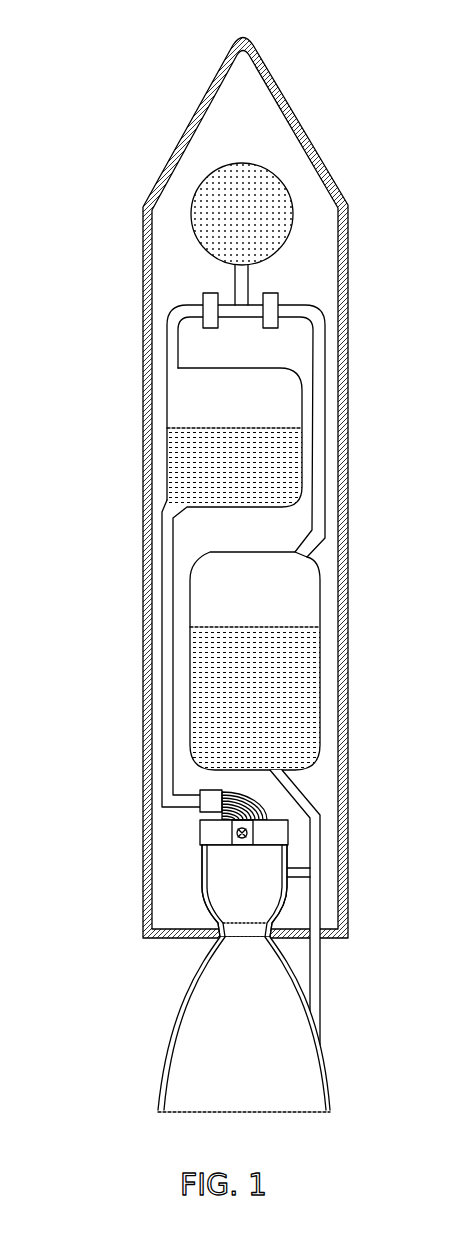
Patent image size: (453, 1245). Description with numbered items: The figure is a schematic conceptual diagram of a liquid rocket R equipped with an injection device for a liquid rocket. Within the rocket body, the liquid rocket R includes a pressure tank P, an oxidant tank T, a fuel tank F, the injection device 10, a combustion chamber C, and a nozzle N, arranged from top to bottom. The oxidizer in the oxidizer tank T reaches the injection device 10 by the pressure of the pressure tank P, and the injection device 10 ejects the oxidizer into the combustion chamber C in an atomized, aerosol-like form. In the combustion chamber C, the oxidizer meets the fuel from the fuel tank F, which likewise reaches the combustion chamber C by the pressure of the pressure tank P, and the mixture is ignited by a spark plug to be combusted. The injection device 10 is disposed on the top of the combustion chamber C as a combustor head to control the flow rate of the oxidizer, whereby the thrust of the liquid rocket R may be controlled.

The liquid rocket R is at (120, 80).
The pressure tank P is at (242, 214).
The oxidant tank T is at (232, 587).
The fuel tank F is at (255, 661).
The injection device 10 is at (268, 803).
The combustion chamber C is at (220, 875).
The nozzle N is at (220, 1033).